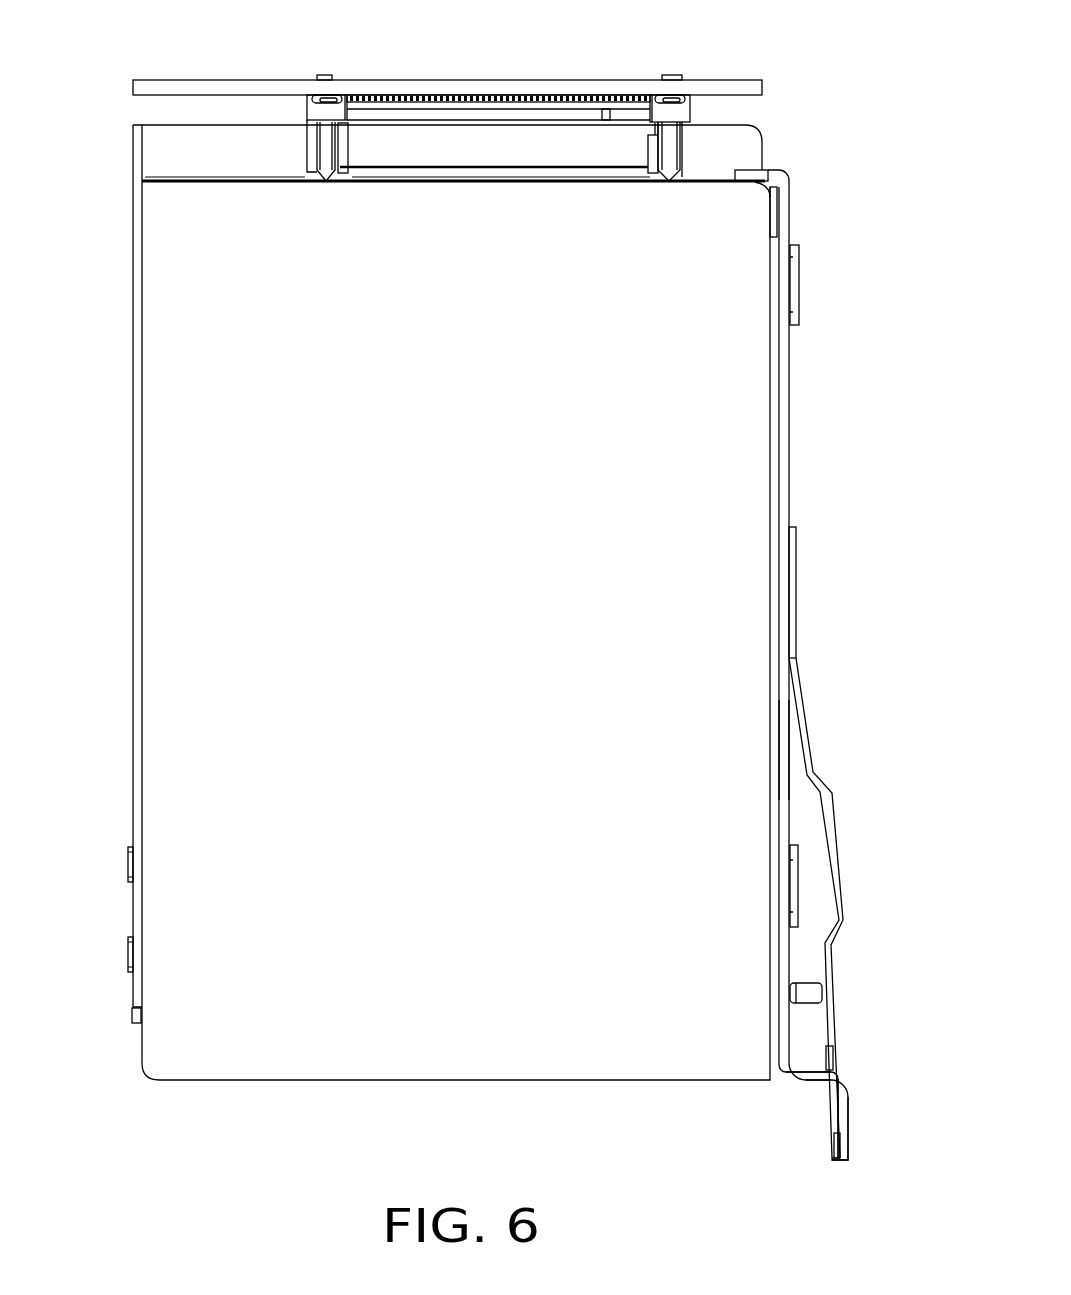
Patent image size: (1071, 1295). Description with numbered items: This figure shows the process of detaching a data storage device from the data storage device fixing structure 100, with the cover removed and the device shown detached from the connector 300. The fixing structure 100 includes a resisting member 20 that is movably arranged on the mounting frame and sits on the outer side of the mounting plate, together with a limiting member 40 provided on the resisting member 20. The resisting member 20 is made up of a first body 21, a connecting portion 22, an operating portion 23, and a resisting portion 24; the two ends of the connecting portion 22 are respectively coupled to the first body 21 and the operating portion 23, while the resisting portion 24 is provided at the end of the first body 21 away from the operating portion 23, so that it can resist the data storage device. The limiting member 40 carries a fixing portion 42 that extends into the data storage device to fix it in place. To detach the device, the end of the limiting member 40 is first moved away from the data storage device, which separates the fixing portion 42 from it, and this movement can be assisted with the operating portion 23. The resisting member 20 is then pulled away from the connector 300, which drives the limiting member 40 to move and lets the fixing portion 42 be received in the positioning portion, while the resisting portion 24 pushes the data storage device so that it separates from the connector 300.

The data storage device fixing structure 100 is at (163, 468).
The connector 300 is at (495, 78).
The resisting member 20 is at (785, 470).
The first body 21 is at (782, 752).
The connecting portion 22 is at (810, 1075).
The operating portion 23 is at (845, 1113).
The resisting portion 24 is at (753, 175).
The limiting member 40 is at (832, 822).
The fixing portion 42 is at (810, 993).